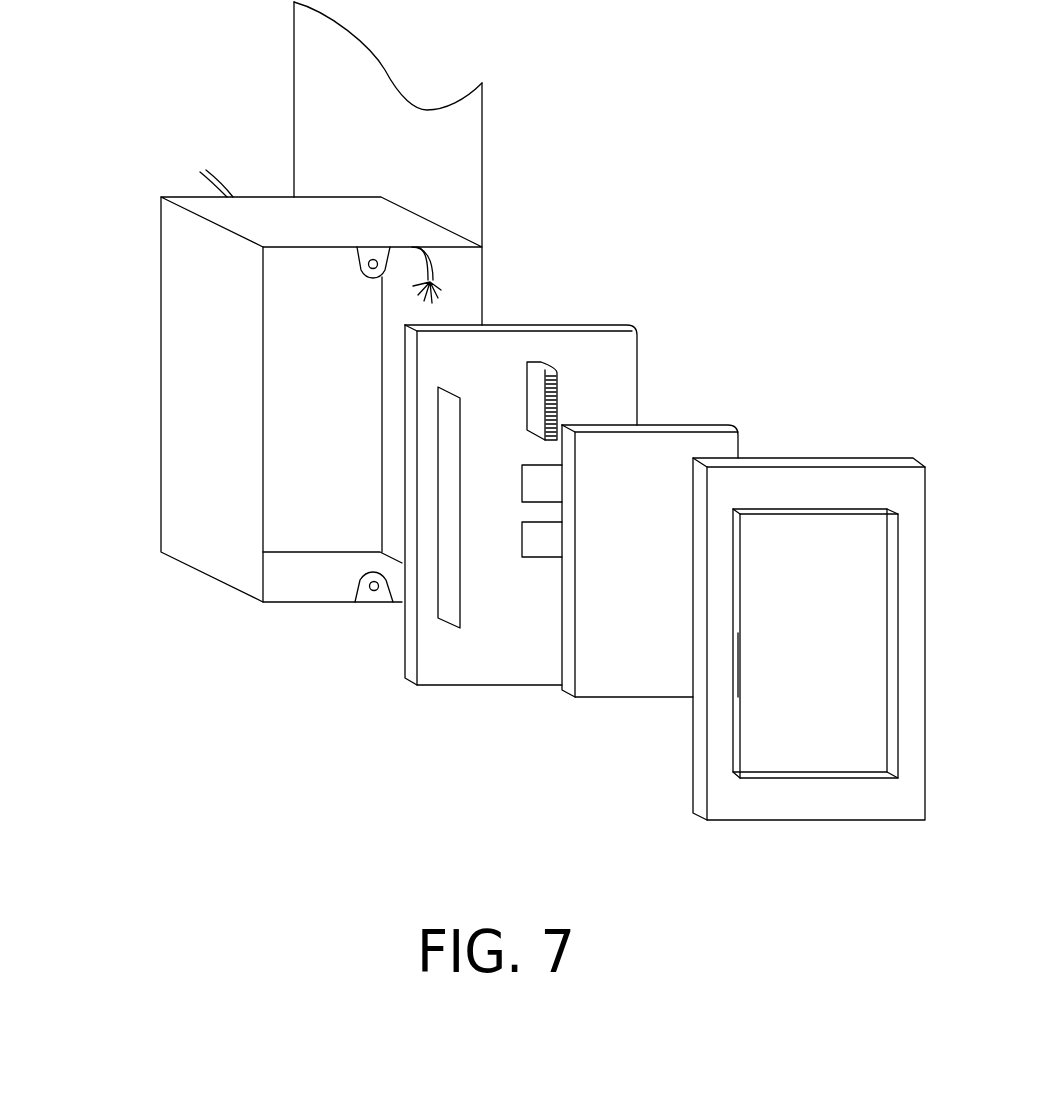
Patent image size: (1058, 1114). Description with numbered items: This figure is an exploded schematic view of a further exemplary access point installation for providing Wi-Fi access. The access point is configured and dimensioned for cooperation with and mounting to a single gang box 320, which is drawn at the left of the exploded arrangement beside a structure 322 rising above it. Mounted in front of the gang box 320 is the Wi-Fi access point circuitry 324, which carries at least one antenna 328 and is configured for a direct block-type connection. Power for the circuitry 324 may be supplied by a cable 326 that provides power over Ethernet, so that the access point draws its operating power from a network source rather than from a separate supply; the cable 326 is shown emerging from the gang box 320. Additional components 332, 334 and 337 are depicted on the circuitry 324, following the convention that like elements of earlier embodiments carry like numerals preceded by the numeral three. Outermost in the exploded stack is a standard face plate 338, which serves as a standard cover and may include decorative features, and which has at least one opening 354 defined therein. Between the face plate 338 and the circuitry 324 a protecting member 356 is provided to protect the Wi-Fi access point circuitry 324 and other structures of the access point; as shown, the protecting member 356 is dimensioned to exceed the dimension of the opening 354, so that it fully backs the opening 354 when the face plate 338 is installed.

The single gang box 320 is at (198, 435).
The wall stud 322 is at (455, 200).
The Wi-Fi access point circuitry 324 is at (567, 343).
The cable 326 is at (436, 263).
The antenna 328 is at (450, 565).
The upper connector block 332 is at (532, 493).
The lower connector block 334 is at (542, 548).
The pin connector 337 is at (557, 398).
The face plate 338 is at (830, 478).
The opening 354 is at (832, 642).
The protecting member 356 is at (662, 428).